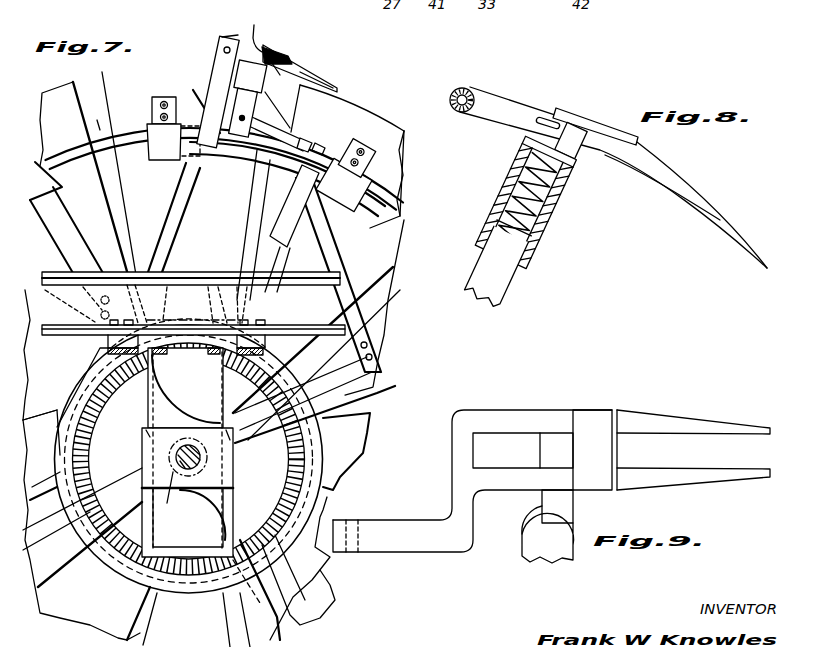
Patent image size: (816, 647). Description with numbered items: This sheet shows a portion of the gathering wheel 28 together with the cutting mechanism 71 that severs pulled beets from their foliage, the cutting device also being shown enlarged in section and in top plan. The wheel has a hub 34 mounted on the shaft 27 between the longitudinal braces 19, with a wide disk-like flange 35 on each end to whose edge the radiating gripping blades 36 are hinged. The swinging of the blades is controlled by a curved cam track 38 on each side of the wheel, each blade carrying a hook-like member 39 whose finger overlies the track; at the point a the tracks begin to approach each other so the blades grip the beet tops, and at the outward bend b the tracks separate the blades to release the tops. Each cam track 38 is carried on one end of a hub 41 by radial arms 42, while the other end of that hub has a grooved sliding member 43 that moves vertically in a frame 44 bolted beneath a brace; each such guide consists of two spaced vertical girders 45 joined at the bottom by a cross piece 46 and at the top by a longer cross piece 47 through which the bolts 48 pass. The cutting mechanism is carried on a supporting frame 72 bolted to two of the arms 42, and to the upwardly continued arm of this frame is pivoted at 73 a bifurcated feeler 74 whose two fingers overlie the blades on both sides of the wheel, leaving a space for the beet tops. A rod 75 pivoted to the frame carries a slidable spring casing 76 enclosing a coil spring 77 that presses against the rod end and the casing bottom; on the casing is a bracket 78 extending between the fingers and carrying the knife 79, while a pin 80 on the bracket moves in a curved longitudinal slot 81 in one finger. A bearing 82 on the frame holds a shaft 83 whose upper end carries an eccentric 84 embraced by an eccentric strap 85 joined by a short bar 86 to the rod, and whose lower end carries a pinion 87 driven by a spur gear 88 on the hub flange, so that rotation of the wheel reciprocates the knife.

In FIG. 7, the longitudinal braces 19 is at (193, 303).
In FIG. 7, the shaft 27 is at (200, 465).
In FIG. 7, the gathering wheel 28 is at (348, 150).
In FIG. 7, the hub 34 is at (247, 445).
In FIG. 7, the disk-like flange 35 is at (65, 455).
In FIG. 7, the gripping blades 36 is at (373, 461).
In FIG. 7, the cam track 38 is at (63, 152).
In FIG. 7, the hook-like member 39 is at (160, 150).
In FIG. 7, the hub 41 is at (166, 498).
In FIG. 7, the radial arms 42 is at (70, 240).
In FIG. 7, the grooved sliding member 43 is at (148, 436).
In FIG. 7, the frame 44 is at (130, 573).
In FIG. 7, the vertical girders 45 is at (145, 412).
In FIG. 7, the cross piece 46 is at (188, 552).
In FIG. 7, the longer cross piece 47 is at (186, 389).
In FIG. 7, the bolts 48 is at (108, 353).
In FIG. 7, the cutting mechanism 71 is at (300, 62).
In FIG. 8, the cutting mechanism 71 is at (613, 177).
In FIG. 9, the cutting mechanism 71 is at (472, 468).
In FIG. 7, the supporting frame 72 is at (213, 46).
In FIG. 7, the pivot 73 is at (238, 30).
In FIG. 8, the pivot 73 is at (460, 113).
In FIG. 7, the bifurcated finger or feeler 74 is at (308, 67).
In FIG. 8, the bifurcated finger or feeler 74 is at (677, 190).
In FIG. 9, the bifurcated finger or feeler 74 is at (693, 450).
In FIG. 7, the rod 75 is at (208, 80).
In FIG. 8, the rod 75 is at (497, 264).
In FIG. 7, the spring casing 76 is at (255, 99).
In FIG. 8, the spring casing 76 is at (550, 223).
In FIG. 9, the spring casing 76 is at (540, 537).
In FIG. 8, the coil spring 77 is at (540, 238).
In FIG. 7, the bracket 78 is at (273, 42).
In FIG. 8, the bracket 78 is at (578, 160).
In FIG. 9, the bracket 78 is at (557, 506).
In FIG. 7, the knife 79 is at (280, 56).
In FIG. 8, the knife 79 is at (609, 127).
In FIG. 9, the knife 79 is at (595, 450).
In FIG. 7, the pin 80 is at (262, 26).
In FIG. 8, the pin 80 is at (568, 130).
In FIG. 7, the curved longitudinal slot 81 is at (285, 76).
In FIG. 8, the curved longitudinal slot 81 is at (607, 158).
In FIG. 7, the bearing 82 is at (302, 207).
In FIG. 7, the shaft 83 is at (278, 258).
In FIG. 7, the eccentric 84 is at (355, 151).
In FIG. 7, the eccentric strap 85 is at (303, 133).
In FIG. 7, the short bar 86 is at (263, 196).
In FIG. 7, the pinion 87 is at (300, 365).
In FIG. 7, the spur gear 88 is at (300, 448).
In FIG. 7, the point on the cam tracks a is at (219, 44).
In FIG. 7, the outward bend of the cam tracks b is at (95, 116).